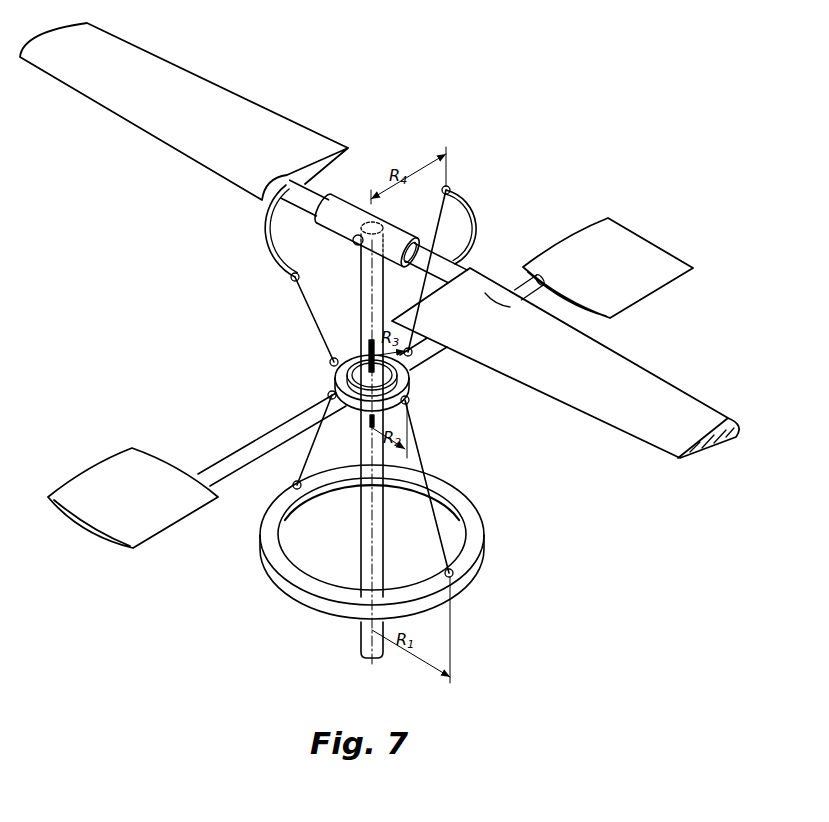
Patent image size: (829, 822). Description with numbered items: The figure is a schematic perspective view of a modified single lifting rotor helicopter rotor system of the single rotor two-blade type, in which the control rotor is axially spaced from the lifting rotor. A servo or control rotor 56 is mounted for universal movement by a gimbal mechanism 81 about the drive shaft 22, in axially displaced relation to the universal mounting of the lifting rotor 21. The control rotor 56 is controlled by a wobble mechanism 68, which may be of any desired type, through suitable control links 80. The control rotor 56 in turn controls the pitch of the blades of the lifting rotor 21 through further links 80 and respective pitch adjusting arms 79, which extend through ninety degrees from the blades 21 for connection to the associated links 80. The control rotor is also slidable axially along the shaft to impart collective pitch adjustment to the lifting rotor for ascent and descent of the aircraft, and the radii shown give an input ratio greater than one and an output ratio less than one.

The lifting rotor 21 is at (250, 105).
The drive shaft 22 is at (364, 538).
The control rotor 56 is at (98, 468).
The wobble mechanism 68 is at (482, 537).
The pitch adjusting arm 79 is at (268, 255).
The control link 80 is at (317, 340).
The gimbal mechanism 81 is at (410, 396).